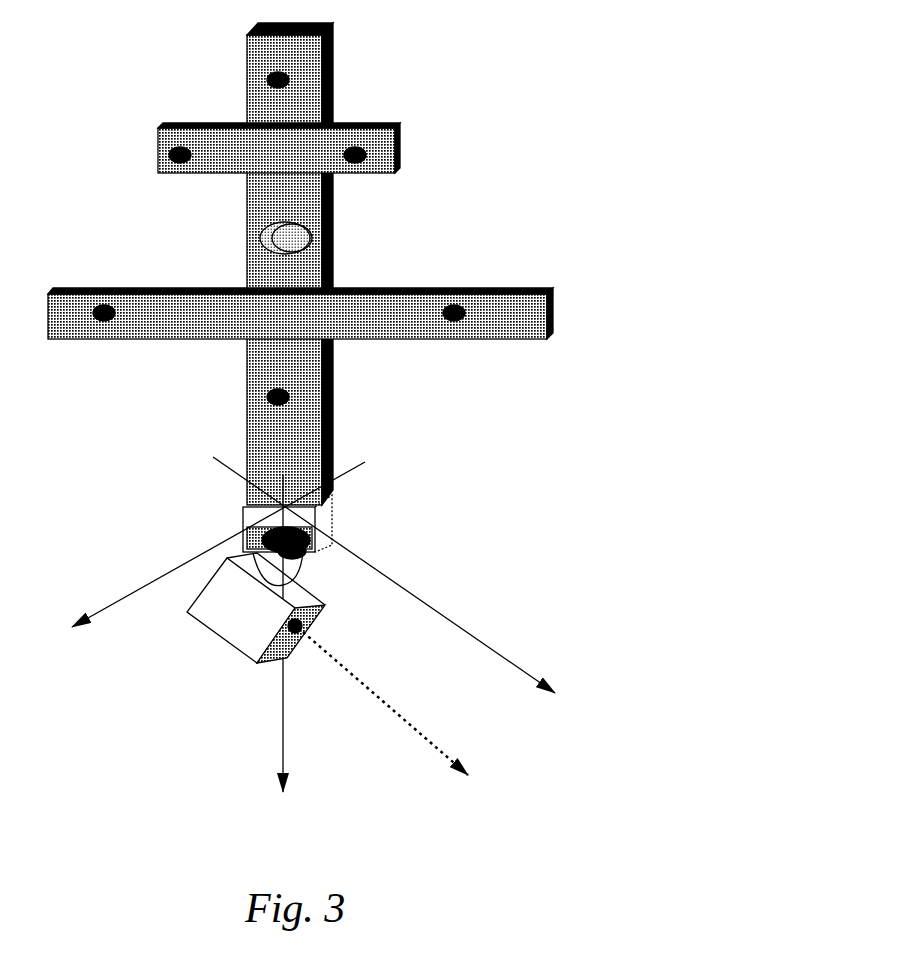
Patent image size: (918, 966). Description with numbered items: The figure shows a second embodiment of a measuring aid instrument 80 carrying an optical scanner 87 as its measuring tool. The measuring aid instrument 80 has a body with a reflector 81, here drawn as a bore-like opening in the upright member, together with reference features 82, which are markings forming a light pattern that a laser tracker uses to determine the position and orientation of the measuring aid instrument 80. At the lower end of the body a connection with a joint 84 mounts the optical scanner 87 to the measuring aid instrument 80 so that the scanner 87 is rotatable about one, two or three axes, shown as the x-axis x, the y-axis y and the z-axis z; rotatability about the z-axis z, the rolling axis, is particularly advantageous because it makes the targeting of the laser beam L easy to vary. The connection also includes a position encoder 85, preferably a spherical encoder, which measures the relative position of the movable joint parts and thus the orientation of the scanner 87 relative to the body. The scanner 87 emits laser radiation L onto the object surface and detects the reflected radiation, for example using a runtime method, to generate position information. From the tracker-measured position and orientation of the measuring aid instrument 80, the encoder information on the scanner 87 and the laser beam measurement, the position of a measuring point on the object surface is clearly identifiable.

The measuring aid instrument 80 is at (298, 264).
The reflector 81 is at (290, 232).
The reference features 82 is at (355, 150).
The joint 84 is at (227, 525).
The position encoder 85 is at (312, 538).
The optical scanner 87 is at (230, 625).
The x-axis x is at (343, 468).
The y-axis y is at (488, 645).
The z-axis z is at (280, 758).
The laser beam L is at (407, 718).